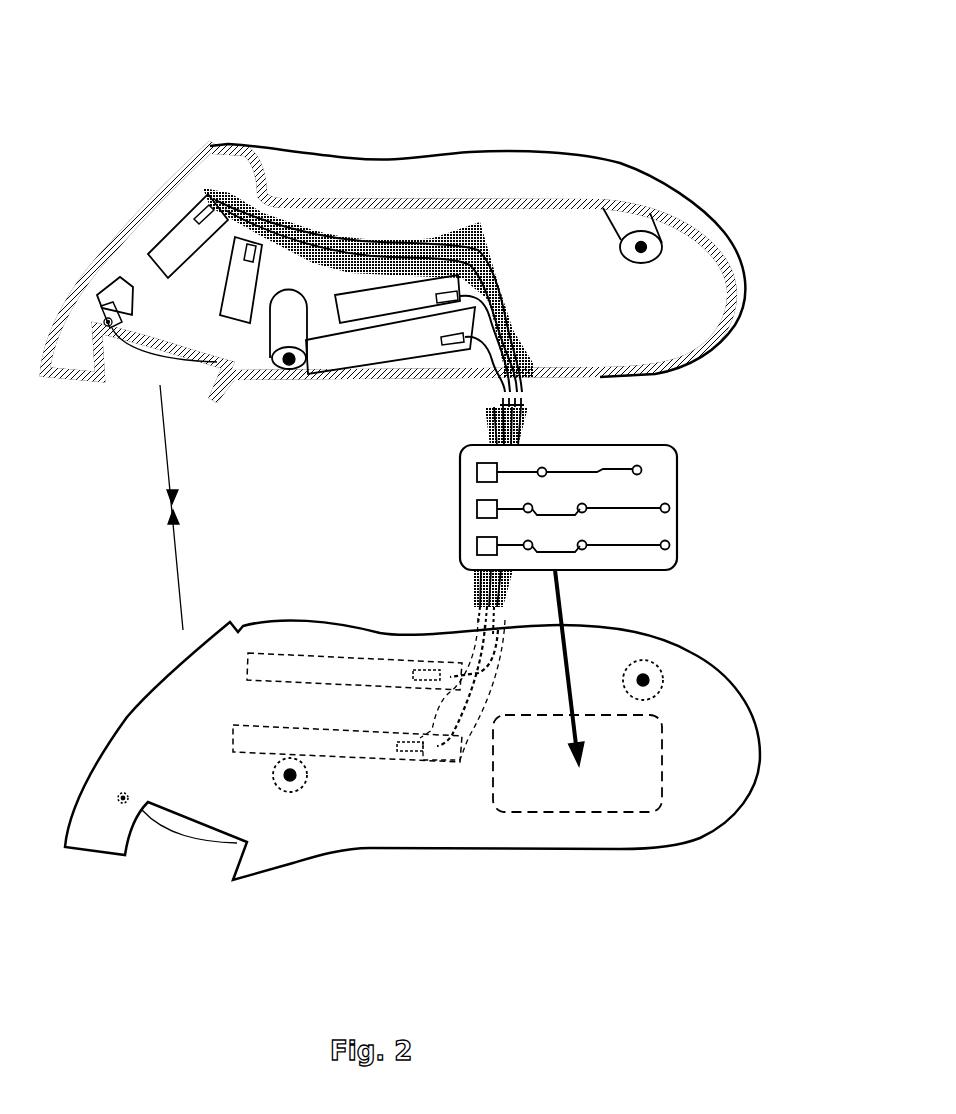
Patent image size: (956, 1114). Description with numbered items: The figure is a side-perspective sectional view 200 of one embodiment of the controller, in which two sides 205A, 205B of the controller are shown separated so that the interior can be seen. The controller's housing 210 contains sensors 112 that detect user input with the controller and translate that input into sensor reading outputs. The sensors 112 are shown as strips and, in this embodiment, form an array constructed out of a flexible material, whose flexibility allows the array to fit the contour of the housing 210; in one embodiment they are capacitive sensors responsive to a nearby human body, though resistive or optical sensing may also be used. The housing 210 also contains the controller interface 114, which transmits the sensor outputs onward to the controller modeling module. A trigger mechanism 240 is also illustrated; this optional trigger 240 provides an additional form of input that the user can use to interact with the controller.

The side-perspective sectional view 200 is at (584, 60).
The first side of the controller 205A is at (388, 388).
The second side of the controller 205B is at (403, 749).
The housing 210 is at (328, 170).
The trigger mechanism 240 is at (143, 367).
The sensors 112 is at (340, 743).
The controller interface 114 is at (677, 513).